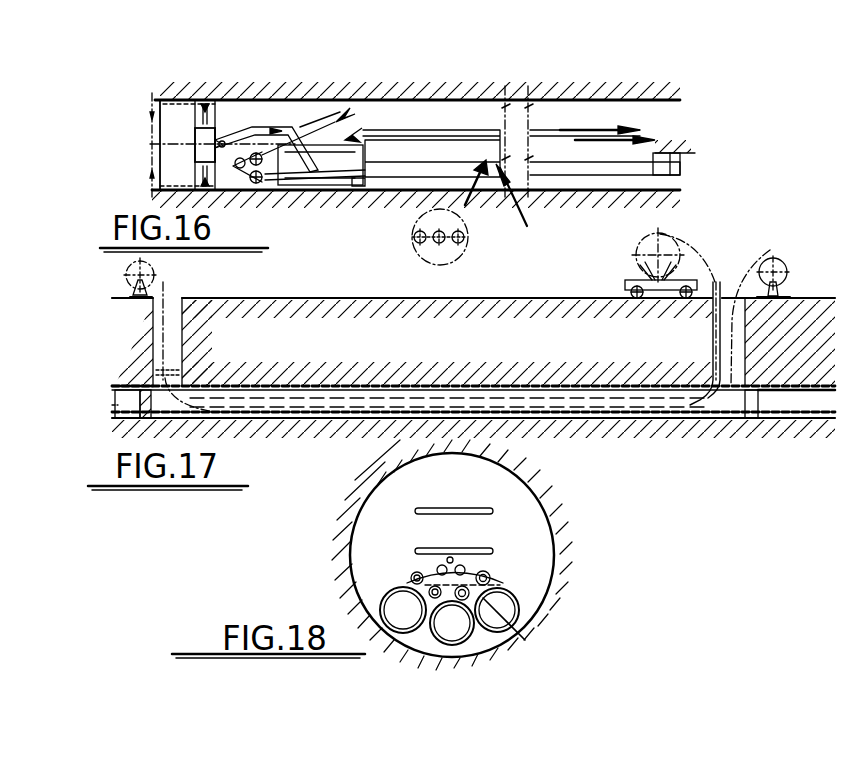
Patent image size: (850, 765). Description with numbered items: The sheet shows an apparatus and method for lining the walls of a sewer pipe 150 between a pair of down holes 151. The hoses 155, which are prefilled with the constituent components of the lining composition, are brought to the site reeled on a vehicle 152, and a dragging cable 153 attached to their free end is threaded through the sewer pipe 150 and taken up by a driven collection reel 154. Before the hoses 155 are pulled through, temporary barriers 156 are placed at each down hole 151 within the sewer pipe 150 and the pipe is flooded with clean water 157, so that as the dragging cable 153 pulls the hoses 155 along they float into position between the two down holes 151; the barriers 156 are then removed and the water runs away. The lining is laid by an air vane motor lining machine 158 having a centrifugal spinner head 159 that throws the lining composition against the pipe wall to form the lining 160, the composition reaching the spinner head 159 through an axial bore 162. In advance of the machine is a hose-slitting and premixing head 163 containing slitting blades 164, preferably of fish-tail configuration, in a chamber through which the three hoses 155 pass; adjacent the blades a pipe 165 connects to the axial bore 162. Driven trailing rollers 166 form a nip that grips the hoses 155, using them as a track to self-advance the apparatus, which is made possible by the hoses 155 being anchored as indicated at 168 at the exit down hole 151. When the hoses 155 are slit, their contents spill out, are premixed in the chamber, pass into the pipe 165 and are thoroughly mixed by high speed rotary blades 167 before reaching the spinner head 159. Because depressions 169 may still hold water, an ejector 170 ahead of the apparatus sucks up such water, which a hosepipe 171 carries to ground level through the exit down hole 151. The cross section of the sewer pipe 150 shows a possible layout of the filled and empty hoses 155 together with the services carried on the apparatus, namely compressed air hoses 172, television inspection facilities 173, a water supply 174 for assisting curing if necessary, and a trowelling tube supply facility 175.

In FIG. 16, the sewer pipe 150 is at (452, 99).
In FIG. 17, the sewer pipe 150 is at (489, 384).
In FIG. 18, the sewer pipe 150 is at (340, 548).
In FIG. 17, the down holes 151 is at (175, 318).
In FIG. 17, the vehicle 152 is at (626, 284).
In FIG. 17, the dragging cable 153 is at (170, 300).
In FIG. 17, the driven collection reel 154 is at (126, 275).
In FIG. 16, the hoses 155 is at (436, 243).
In FIG. 17, the hoses 155 is at (552, 416).
In FIG. 18, the hoses 155 is at (477, 550).
In FIG. 17, the temporary barriers 156 is at (138, 406).
In FIG. 17, the clean water 157 is at (375, 403).
In FIG. 16, the air vane motor lining machine 158 is at (218, 140).
In FIG. 16, the centrifugal spinner head 159 is at (199, 126).
In FIG. 16, the lining 160 is at (154, 118).
In FIG. 17, the lining 160 is at (787, 262).
In FIG. 16, the axial bore 162 is at (238, 130).
In FIG. 16, the hose-slitting and lining composition premixing head 163 is at (345, 120).
In FIG. 16, the slitting blades 164 is at (380, 137).
In FIG. 16, the pipe 165 is at (330, 122).
In FIG. 16, the trailing rollers 166 is at (262, 174).
In FIG. 16, the high speed rotary blades 167 is at (217, 150).
In FIG. 16, the anchoring 168 is at (686, 154).
In FIG. 16, the depressions 169 is at (399, 198).
In FIG. 16, the ejector 170 is at (362, 182).
In FIG. 16, the hosepipe 171 is at (578, 132).
In FIG. 18, the compressed air hoses 172 is at (415, 572).
In FIG. 18, the television inspection facilities 173 is at (459, 568).
In FIG. 18, the water supply 174 is at (527, 632).
In FIG. 18, the trowelling tube supply facility 175 is at (413, 581).